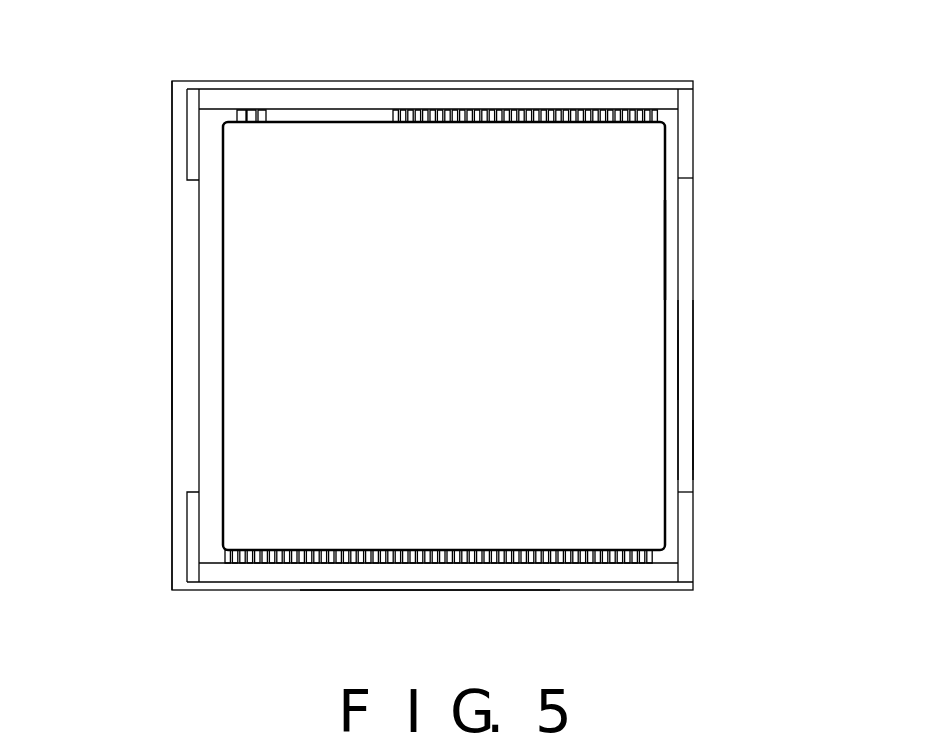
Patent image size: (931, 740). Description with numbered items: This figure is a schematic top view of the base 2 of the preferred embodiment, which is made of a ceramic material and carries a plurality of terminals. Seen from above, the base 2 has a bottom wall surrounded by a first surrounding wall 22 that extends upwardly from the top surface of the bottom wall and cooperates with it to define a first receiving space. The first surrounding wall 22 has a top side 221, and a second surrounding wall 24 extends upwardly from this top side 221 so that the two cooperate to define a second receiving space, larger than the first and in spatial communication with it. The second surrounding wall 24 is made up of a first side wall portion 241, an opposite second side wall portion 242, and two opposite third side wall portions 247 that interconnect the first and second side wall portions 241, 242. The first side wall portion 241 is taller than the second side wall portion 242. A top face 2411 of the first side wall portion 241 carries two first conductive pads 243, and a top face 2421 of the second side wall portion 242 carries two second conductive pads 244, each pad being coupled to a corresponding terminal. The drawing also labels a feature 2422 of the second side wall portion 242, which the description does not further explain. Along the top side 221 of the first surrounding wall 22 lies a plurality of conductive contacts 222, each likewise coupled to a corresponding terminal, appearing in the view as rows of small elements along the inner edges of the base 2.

The base 2 is at (445, 330).
The first surrounding wall 22 is at (505, 323).
The top side 221 is at (673, 250).
The conductive contacts 222 is at (495, 118).
The second surrounding wall 24 is at (445, 365).
The first side wall portion 241 is at (172, 297).
The top face 2411 is at (182, 368).
The second side wall portion 242 is at (693, 408).
The top face 2421 is at (687, 392).
The outer wall of second frame side 2422 is at (672, 459).
The first conductive pads 243 is at (190, 142).
The second conductive pads 244 is at (685, 163).
The third side wall portions 247 is at (430, 585).